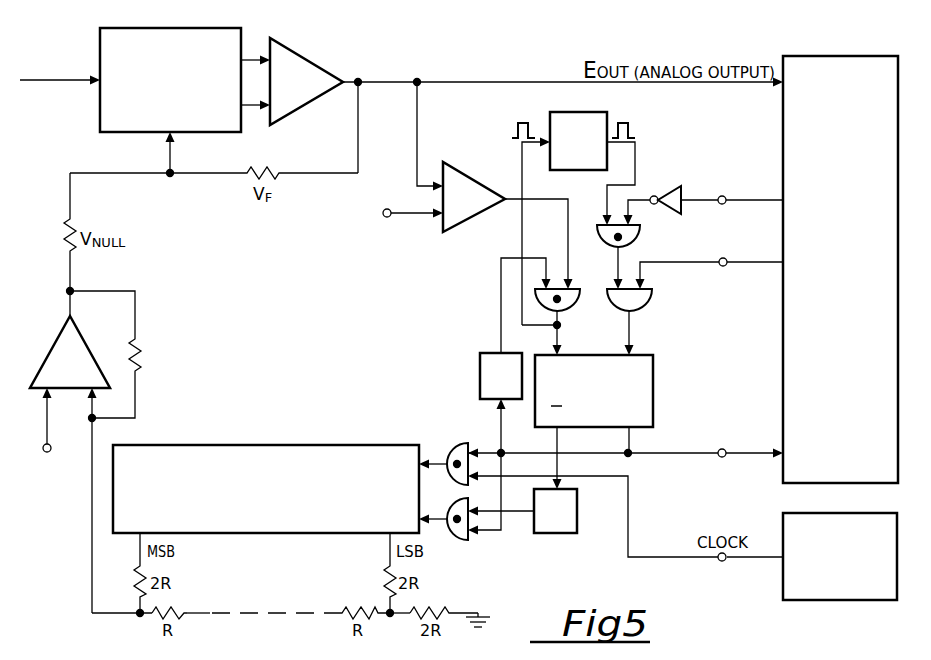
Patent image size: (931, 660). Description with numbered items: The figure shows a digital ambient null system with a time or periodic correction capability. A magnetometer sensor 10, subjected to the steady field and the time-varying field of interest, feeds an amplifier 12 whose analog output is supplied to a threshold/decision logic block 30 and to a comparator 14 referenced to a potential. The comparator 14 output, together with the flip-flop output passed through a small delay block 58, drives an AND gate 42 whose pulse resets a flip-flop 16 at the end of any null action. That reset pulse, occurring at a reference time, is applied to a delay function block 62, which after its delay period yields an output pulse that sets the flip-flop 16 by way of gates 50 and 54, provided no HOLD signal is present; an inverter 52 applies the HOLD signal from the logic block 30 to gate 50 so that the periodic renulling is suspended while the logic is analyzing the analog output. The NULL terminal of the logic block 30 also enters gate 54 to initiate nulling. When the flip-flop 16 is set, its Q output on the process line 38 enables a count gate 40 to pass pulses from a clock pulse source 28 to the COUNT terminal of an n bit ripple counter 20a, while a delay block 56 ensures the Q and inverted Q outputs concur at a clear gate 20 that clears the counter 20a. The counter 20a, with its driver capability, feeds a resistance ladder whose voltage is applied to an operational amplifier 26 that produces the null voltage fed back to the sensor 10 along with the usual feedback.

The magnetometer sensor 10 is at (103, 105).
The amplifier 12 is at (323, 42).
The comparator 14 is at (452, 229).
The flip-flop 16 is at (655, 391).
The AND gate 20 is at (462, 541).
The n bit ripple counter 20a is at (239, 445).
The operational amplifier 26 is at (56, 342).
The clock pulse source 28 is at (786, 576).
The threshold/decision logic block 30 is at (793, 316).
The process line 38 is at (531, 450).
The count AND gate 40 is at (458, 443).
The AND gate 42 is at (568, 306).
The gate 50 is at (638, 235).
The inverter 52 is at (671, 188).
The gate 54 is at (645, 308).
The delay function block 56 is at (560, 534).
The delay block 58 is at (480, 376).
The delay function block ΔT 62 is at (590, 98).